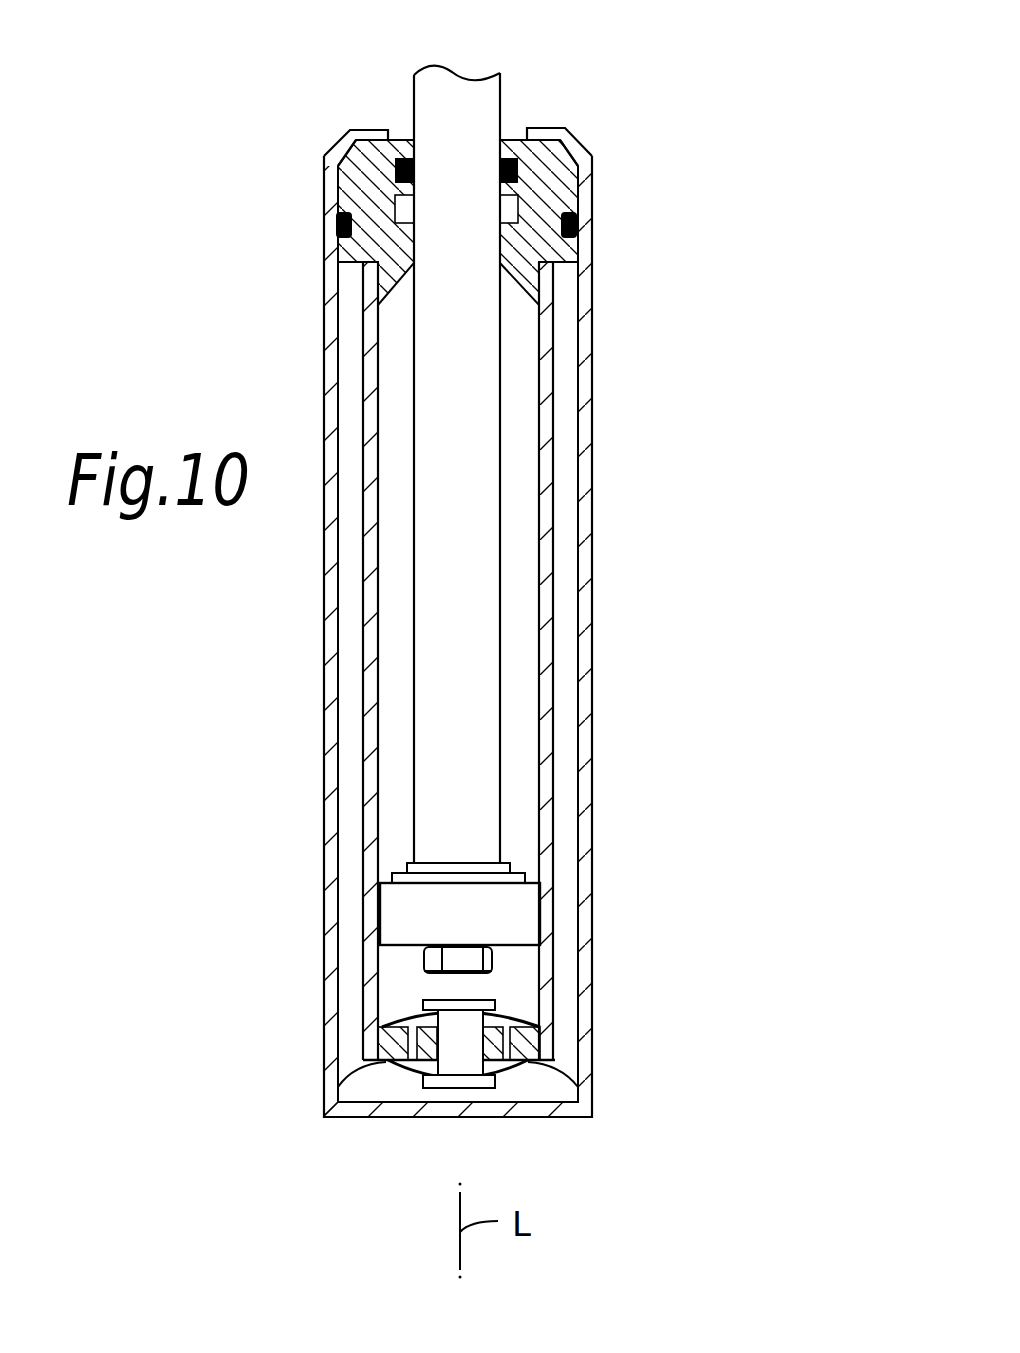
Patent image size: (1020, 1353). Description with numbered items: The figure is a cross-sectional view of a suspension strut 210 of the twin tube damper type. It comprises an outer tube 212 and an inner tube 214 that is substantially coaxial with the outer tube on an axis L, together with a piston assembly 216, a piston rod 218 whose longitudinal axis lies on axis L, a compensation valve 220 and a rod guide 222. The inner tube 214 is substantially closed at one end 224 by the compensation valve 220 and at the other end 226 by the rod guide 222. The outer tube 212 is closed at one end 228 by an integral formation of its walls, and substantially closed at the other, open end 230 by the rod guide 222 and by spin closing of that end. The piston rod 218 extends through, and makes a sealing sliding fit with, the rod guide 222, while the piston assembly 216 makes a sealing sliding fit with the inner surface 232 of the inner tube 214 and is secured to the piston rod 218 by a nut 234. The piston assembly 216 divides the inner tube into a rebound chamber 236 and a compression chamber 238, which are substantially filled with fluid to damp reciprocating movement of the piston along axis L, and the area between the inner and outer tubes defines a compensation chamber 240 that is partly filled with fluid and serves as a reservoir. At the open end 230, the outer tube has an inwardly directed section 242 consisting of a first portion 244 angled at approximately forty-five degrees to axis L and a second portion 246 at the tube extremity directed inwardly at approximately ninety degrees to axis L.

The suspension strut 210 is at (662, 366).
The outer tube 212 is at (587, 607).
The inner tube 214 is at (547, 543).
The piston assembly 216 is at (505, 911).
The piston rod 218 is at (485, 735).
The compensation valve 220 is at (338, 1084).
The rod guide 222 is at (325, 156).
The end of inner tube 224 is at (577, 1078).
The other end of inner tube 226 is at (580, 270).
The end of outer tube 228 is at (563, 1108).
The open end of outer tube 230 is at (536, 110).
The inner surface of inner tube 232 is at (537, 797).
The nut 234 is at (490, 958).
The rebound chamber 236 is at (390, 793).
The compression chamber 238 is at (410, 987).
The compensation chamber 240 is at (350, 888).
The section of outer tube 242 is at (340, 124).
The first portion 244 is at (583, 143).
The second portion 246 is at (545, 128).